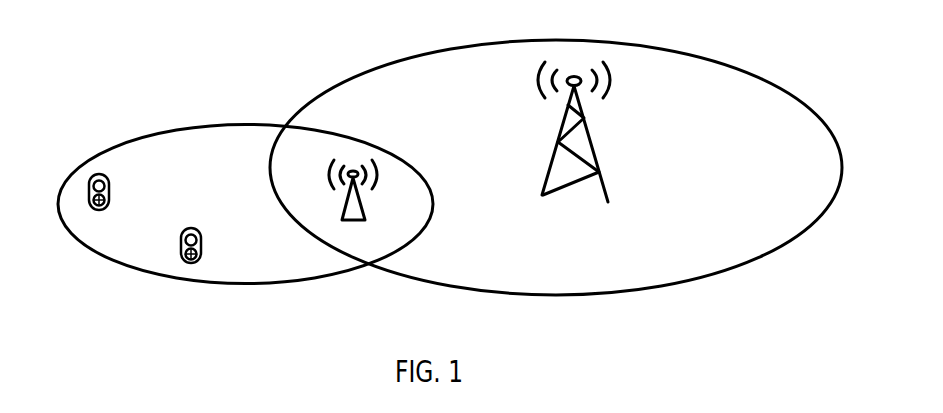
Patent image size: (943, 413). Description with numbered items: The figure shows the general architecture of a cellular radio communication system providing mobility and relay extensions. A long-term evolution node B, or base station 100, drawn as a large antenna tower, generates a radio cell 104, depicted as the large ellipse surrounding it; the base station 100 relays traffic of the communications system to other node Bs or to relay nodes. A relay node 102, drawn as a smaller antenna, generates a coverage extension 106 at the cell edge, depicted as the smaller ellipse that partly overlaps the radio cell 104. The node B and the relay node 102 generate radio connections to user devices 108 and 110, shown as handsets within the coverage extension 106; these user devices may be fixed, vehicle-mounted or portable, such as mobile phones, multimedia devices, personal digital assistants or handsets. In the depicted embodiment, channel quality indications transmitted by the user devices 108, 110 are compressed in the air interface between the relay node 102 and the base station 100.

The node B (base station) 100 is at (593, 136).
The relay node 102 is at (367, 214).
The radio cell 104 is at (795, 97).
The coverage extension 106 is at (61, 212).
The user device 108 is at (202, 245).
The user device 110 is at (110, 190).